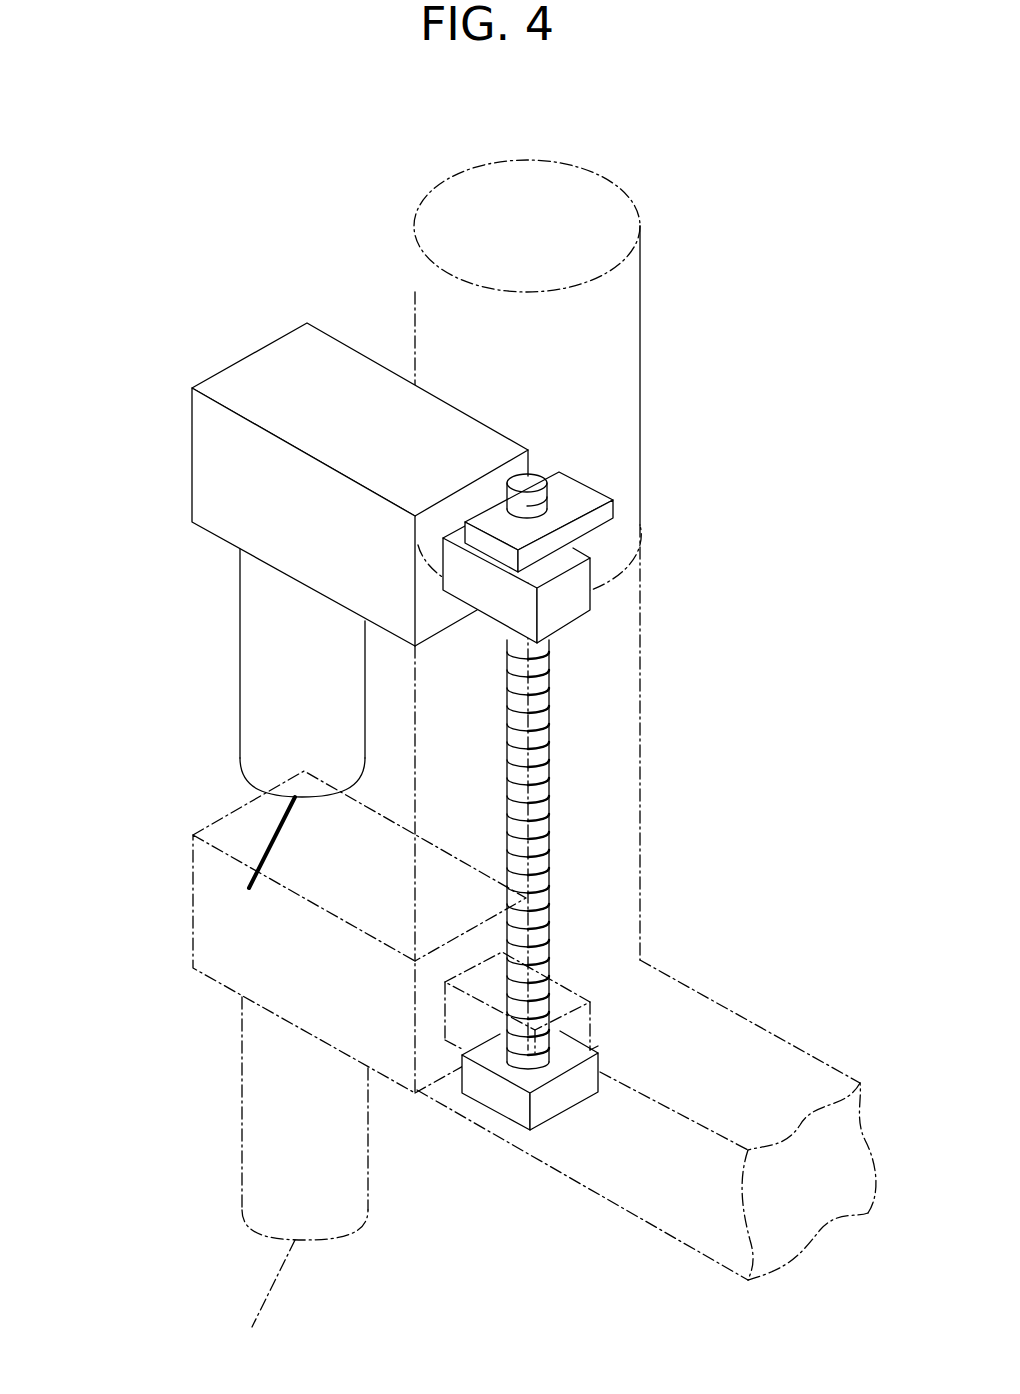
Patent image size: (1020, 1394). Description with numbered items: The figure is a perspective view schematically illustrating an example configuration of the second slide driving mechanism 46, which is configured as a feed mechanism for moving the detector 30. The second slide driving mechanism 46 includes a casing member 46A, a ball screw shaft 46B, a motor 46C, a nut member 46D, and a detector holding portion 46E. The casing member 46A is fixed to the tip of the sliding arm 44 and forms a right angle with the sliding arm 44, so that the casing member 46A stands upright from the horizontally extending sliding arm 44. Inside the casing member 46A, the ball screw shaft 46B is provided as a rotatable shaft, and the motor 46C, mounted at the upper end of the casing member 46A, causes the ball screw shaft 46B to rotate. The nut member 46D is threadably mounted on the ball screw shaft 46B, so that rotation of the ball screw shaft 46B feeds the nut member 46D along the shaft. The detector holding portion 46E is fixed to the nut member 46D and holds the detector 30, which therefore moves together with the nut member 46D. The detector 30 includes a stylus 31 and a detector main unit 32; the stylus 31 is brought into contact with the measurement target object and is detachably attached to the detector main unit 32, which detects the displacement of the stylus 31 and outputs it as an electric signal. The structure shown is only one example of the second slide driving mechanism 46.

The detector 30 is at (112, 712).
The stylus 31 is at (238, 809).
The detector main unit 32 is at (240, 709).
The sliding arm 44 is at (822, 1060).
The second slide driving mechanism 46 is at (511, 645).
The casing member 46A is at (641, 686).
The ball screw shaft 46B is at (550, 778).
The motor 46C is at (641, 386).
The nut member 46D is at (586, 596).
The detector holding portion 46E is at (248, 373).